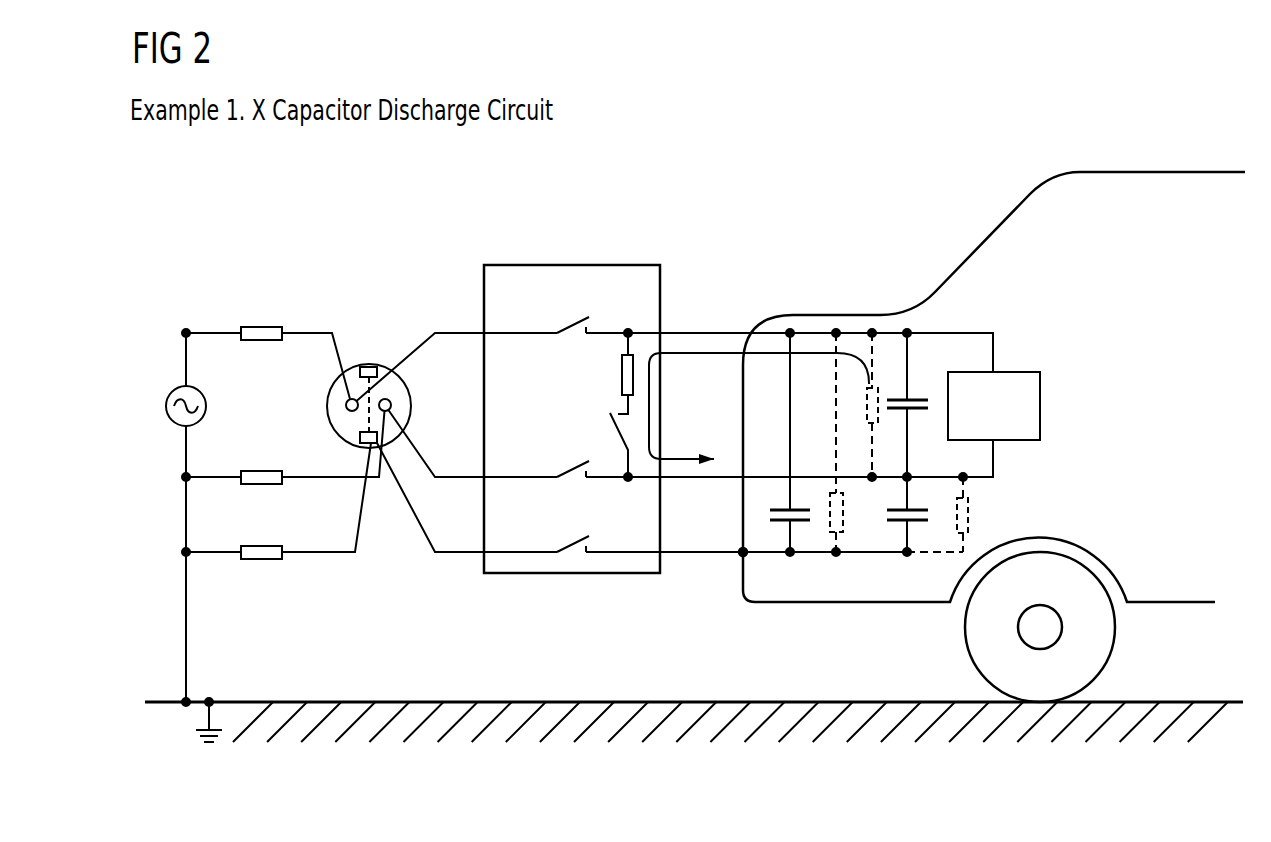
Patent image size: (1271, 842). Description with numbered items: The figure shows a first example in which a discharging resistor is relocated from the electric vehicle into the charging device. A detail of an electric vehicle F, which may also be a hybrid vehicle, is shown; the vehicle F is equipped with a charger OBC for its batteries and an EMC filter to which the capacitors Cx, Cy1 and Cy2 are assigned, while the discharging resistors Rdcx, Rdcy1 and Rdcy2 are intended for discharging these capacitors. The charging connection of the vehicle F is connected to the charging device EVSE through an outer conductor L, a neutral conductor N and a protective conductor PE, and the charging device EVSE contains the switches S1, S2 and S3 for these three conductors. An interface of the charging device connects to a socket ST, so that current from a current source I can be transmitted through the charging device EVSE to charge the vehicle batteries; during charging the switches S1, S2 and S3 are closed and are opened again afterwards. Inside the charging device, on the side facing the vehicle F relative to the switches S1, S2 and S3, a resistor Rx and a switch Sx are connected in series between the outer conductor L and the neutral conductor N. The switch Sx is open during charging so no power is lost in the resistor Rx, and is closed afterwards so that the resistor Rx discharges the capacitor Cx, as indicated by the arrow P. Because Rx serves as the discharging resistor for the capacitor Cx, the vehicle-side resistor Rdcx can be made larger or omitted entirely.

The current source I is at (165, 407).
The outer conductor L is at (589, 355).
The neutral conductor N is at (589, 447).
The protective conductor PE is at (574, 501).
The socket ST is at (357, 370).
The charging device EVSE is at (572, 264).
The switch S1 is at (572, 324).
The switch S2 is at (572, 462).
The switch S3 is at (572, 542).
The resistor Rx is at (620, 373).
The switch Sx is at (612, 433).
The arrow P is at (714, 351).
The electric vehicle F is at (990, 247).
The capacitor Cx is at (912, 397).
The discharging resistor Rdcx is at (878, 420).
The capacitor Cy1 is at (785, 523).
The discharging resistor Rdcy1 is at (838, 535).
The capacitor Cy2 is at (910, 523).
The discharging resistor Rdcy2 is at (970, 517).
The charger OBC is at (994, 406).